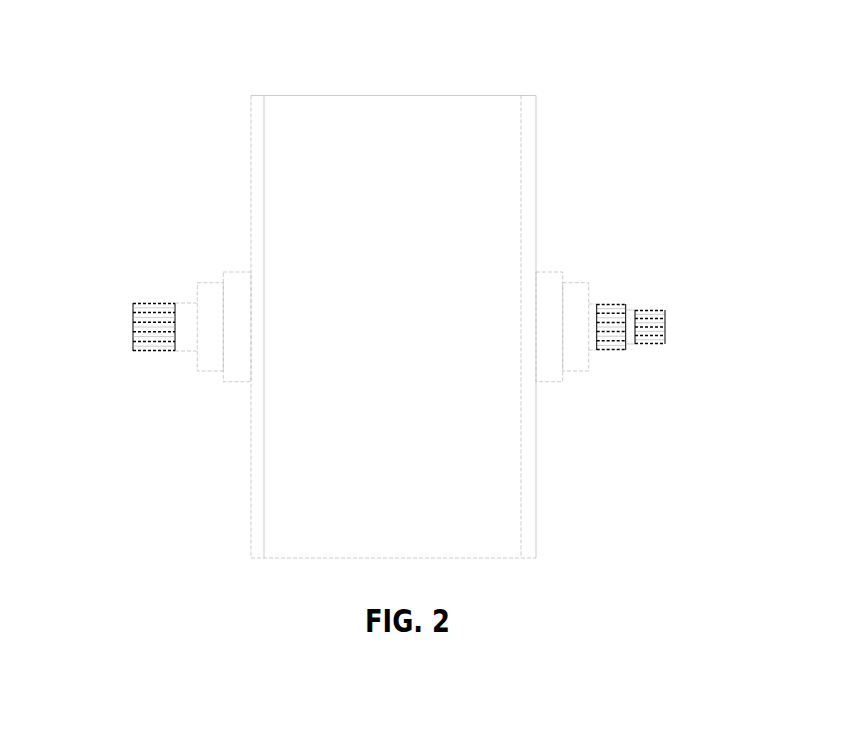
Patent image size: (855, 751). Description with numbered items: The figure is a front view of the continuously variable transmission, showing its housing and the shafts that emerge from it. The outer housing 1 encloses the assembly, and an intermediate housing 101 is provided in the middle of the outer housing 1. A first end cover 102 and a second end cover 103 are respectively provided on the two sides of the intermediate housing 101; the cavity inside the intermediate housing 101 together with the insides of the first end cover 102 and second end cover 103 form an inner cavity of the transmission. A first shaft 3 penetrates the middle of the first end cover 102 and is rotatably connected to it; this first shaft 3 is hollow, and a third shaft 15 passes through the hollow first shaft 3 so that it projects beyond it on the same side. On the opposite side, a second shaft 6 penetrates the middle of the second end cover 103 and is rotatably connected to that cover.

The outer housing 1 is at (378, 291).
The intermediate housing 101 is at (307, 480).
The first end cover 102 is at (527, 421).
The second end cover 103 is at (258, 450).
The first shaft 3 is at (609, 303).
The second shaft 6 is at (137, 306).
The third shaft 15 is at (733, 274).